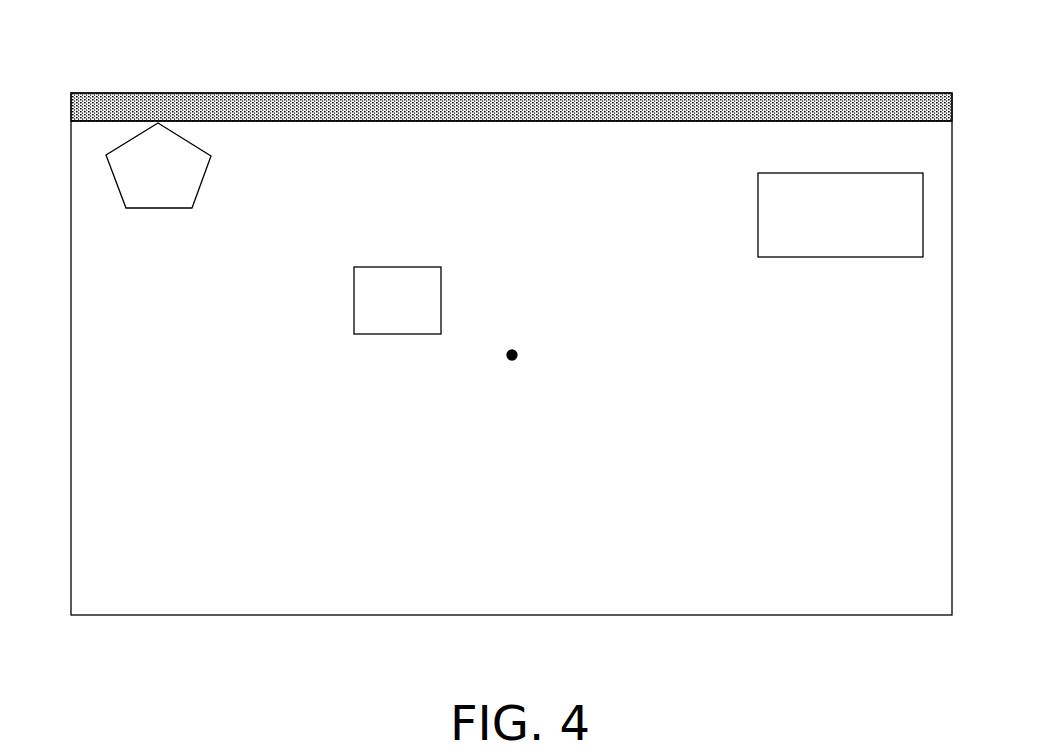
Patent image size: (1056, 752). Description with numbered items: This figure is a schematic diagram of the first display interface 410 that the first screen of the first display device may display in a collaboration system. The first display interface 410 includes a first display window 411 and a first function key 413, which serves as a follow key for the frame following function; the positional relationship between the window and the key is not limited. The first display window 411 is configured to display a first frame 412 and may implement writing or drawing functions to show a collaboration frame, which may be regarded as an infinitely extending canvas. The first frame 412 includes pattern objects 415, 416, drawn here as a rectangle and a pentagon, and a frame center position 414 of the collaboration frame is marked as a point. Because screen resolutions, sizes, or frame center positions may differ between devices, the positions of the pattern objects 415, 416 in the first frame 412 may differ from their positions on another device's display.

The first display interface 410 is at (952, 367).
The first display window 411 is at (797, 92).
The first frame 412 is at (620, 152).
The first function key 413 is at (867, 172).
The frame center position 414 is at (518, 353).
The pattern object 415 is at (399, 266).
The pattern object 416 is at (203, 182).